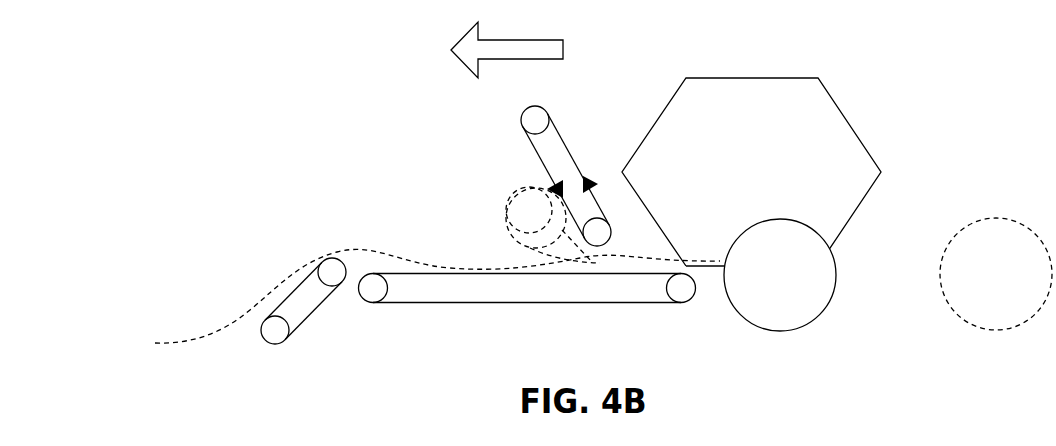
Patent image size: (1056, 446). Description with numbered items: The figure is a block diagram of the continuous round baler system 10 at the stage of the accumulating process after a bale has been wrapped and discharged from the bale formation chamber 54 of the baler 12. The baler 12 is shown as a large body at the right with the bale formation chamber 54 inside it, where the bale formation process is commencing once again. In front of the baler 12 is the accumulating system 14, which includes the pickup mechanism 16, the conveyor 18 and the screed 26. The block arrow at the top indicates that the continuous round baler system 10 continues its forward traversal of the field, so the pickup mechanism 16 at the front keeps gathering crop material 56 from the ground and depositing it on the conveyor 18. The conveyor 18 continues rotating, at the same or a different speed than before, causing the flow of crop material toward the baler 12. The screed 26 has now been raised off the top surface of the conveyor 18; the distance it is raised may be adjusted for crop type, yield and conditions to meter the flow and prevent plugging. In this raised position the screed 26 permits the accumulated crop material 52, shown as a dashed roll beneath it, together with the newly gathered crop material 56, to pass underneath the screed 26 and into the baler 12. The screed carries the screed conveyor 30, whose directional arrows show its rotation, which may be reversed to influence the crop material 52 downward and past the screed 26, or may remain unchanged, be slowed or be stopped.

The continuous round baler system 10 is at (309, 161).
The baler 12 is at (827, 92).
The accumulating system 14 is at (449, 230).
The pickup mechanism 16 is at (313, 314).
The conveyor 18 is at (436, 303).
The screed 26 is at (512, 130).
The screed conveyor 30 is at (562, 138).
The crop material 52 is at (515, 197).
The bale formation chamber 54 is at (789, 116).
The crop material 56 is at (365, 253).